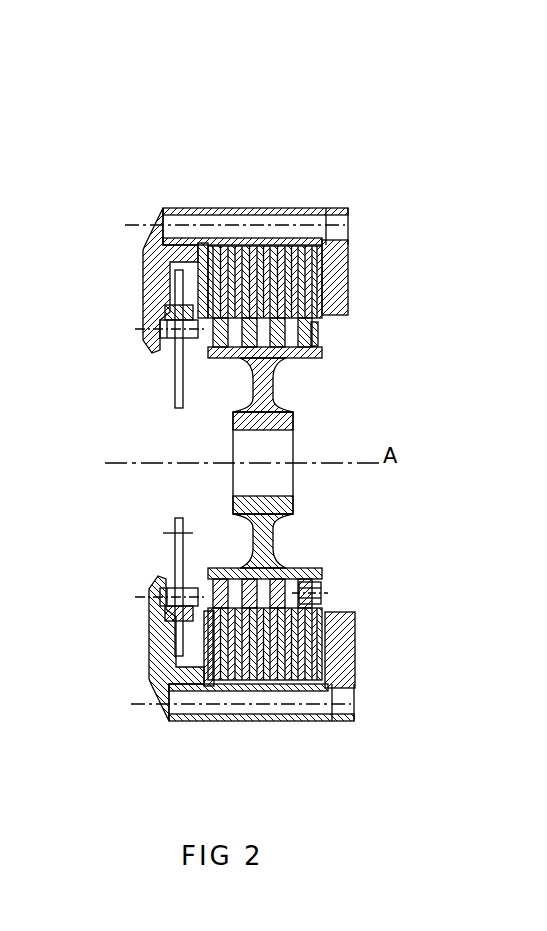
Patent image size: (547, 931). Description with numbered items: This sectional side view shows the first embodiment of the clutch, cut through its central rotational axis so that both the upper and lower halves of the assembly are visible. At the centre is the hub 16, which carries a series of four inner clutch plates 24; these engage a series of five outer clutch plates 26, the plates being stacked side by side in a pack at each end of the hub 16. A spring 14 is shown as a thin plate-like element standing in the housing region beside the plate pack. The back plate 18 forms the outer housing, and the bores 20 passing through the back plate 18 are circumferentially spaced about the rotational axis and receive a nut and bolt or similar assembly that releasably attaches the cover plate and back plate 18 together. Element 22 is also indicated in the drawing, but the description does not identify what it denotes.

The spring 14 is at (193, 397).
The hub 16 is at (298, 398).
The back plate 18 is at (337, 278).
The bores 20 is at (238, 224).
The retaining ring 22 is at (318, 346).
The inner clutch plates 24 is at (312, 558).
The outer clutch plates 26 is at (330, 662).